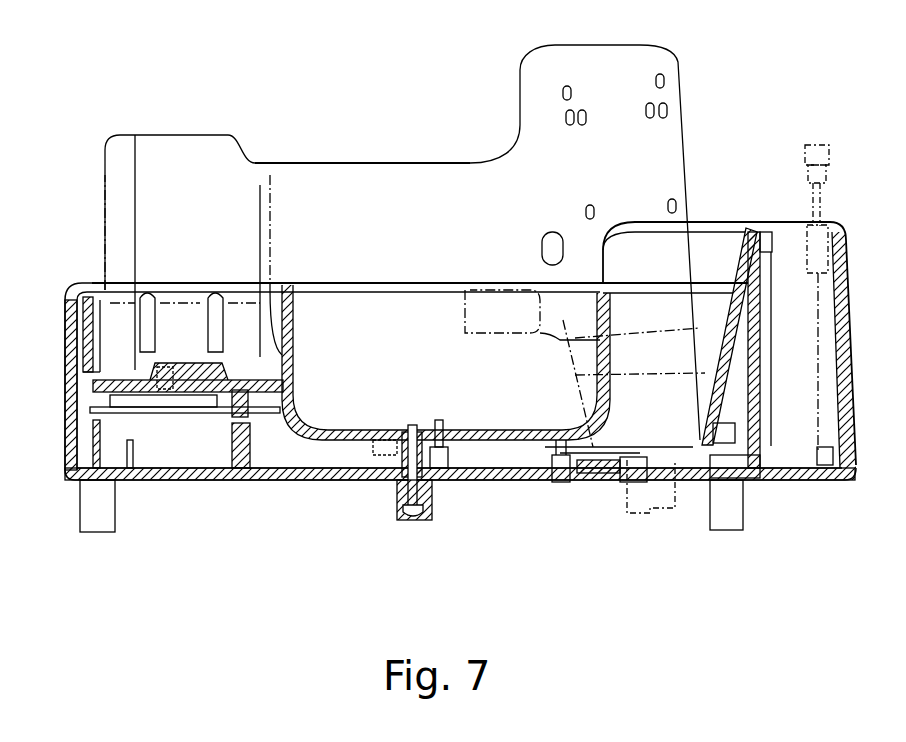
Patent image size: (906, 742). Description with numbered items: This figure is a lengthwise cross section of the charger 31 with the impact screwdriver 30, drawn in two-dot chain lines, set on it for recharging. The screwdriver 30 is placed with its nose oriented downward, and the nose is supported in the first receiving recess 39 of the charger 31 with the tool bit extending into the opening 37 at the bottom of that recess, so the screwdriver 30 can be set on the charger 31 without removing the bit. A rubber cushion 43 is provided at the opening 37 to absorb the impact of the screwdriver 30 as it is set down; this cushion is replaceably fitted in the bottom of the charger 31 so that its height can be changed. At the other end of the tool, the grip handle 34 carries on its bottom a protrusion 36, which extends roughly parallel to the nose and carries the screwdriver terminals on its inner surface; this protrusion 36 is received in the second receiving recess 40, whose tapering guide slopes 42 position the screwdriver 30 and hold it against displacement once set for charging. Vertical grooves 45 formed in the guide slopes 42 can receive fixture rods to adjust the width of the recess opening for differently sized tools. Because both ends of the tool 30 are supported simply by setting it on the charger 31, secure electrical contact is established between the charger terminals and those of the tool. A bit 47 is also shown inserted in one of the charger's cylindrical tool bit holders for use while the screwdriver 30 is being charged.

The impact screwdriver 30 is at (425, 128).
The charger 31 is at (842, 210).
The grip handle 34 is at (350, 190).
The protrusion 36 is at (283, 352).
The opening 37 is at (686, 482).
The first receiving recess 39 is at (634, 413).
The second receiving recess 40 is at (128, 331).
The tapering guide slopes 42 is at (115, 292).
The rubber cushion 43 is at (567, 480).
The vertical grooves 45 is at (213, 295).
The bit 47 is at (805, 152).